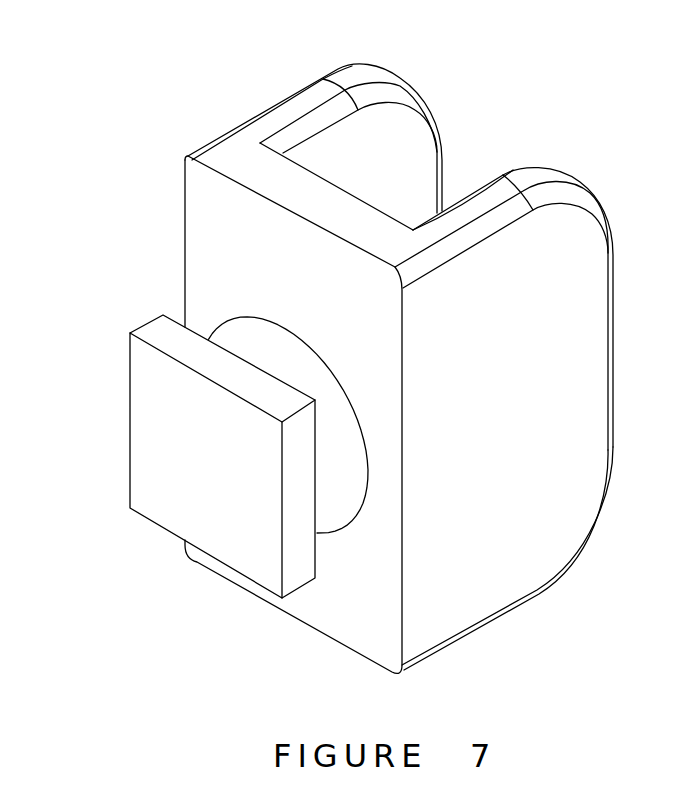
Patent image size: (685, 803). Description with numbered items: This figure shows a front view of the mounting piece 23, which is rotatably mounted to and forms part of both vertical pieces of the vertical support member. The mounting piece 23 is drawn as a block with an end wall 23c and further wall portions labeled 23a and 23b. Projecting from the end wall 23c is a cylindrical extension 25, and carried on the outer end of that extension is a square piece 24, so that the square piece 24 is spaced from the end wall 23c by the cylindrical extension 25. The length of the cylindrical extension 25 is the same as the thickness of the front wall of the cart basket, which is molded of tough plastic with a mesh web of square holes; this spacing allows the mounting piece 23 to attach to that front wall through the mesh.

The mounting piece 23 is at (381, 369).
The side wall of clamp block 23a is at (590, 356).
The top portion of clamp block 23b is at (225, 130).
The end wall 23c is at (205, 213).
The square piece 24 is at (182, 522).
The cylindrical extension 25 is at (240, 335).